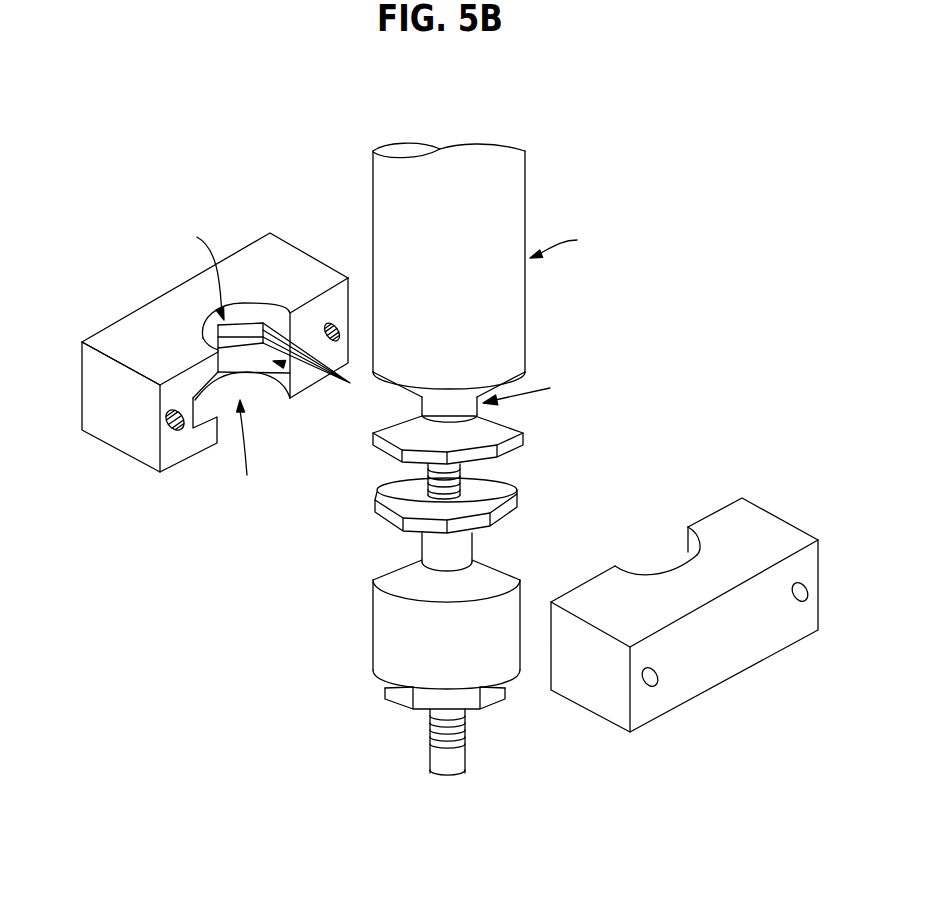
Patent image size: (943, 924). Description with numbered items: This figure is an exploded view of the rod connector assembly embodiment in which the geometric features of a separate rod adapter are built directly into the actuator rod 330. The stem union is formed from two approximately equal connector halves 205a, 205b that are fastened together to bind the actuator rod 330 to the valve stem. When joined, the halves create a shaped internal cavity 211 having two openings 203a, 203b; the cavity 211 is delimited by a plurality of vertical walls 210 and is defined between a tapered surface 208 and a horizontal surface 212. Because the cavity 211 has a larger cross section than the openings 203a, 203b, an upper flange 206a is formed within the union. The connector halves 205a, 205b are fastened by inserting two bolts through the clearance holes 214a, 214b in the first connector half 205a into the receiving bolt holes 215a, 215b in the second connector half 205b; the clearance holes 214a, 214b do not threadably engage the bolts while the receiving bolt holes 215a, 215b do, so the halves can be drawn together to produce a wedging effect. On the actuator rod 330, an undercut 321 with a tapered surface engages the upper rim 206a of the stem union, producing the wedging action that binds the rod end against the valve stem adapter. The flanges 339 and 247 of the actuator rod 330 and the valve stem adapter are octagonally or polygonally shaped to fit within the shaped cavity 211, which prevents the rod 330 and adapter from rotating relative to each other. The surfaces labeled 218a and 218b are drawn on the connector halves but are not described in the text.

The opening 203a is at (185, 270).
The opening 203b is at (250, 450).
The first connector half 205a is at (610, 677).
The second connector half 205b is at (103, 420).
The upper flange 206a is at (253, 310).
The tapered surface 208 is at (300, 330).
The vertical walls 210 is at (318, 368).
The shaped internal cavity 211 is at (310, 370).
The horizontal surface 212 is at (260, 363).
The clearance hole 214a is at (801, 600).
The clearance hole 214b is at (654, 684).
The receiving bolt hole 215a is at (337, 323).
The receiving bolt hole 215b is at (183, 432).
The top face 218a is at (135, 330).
The end face 218b is at (143, 463).
The flange 247 is at (388, 516).
The undercut 321 is at (502, 397).
The actuator rod 330 is at (493, 270).
The flange 339 is at (380, 447).